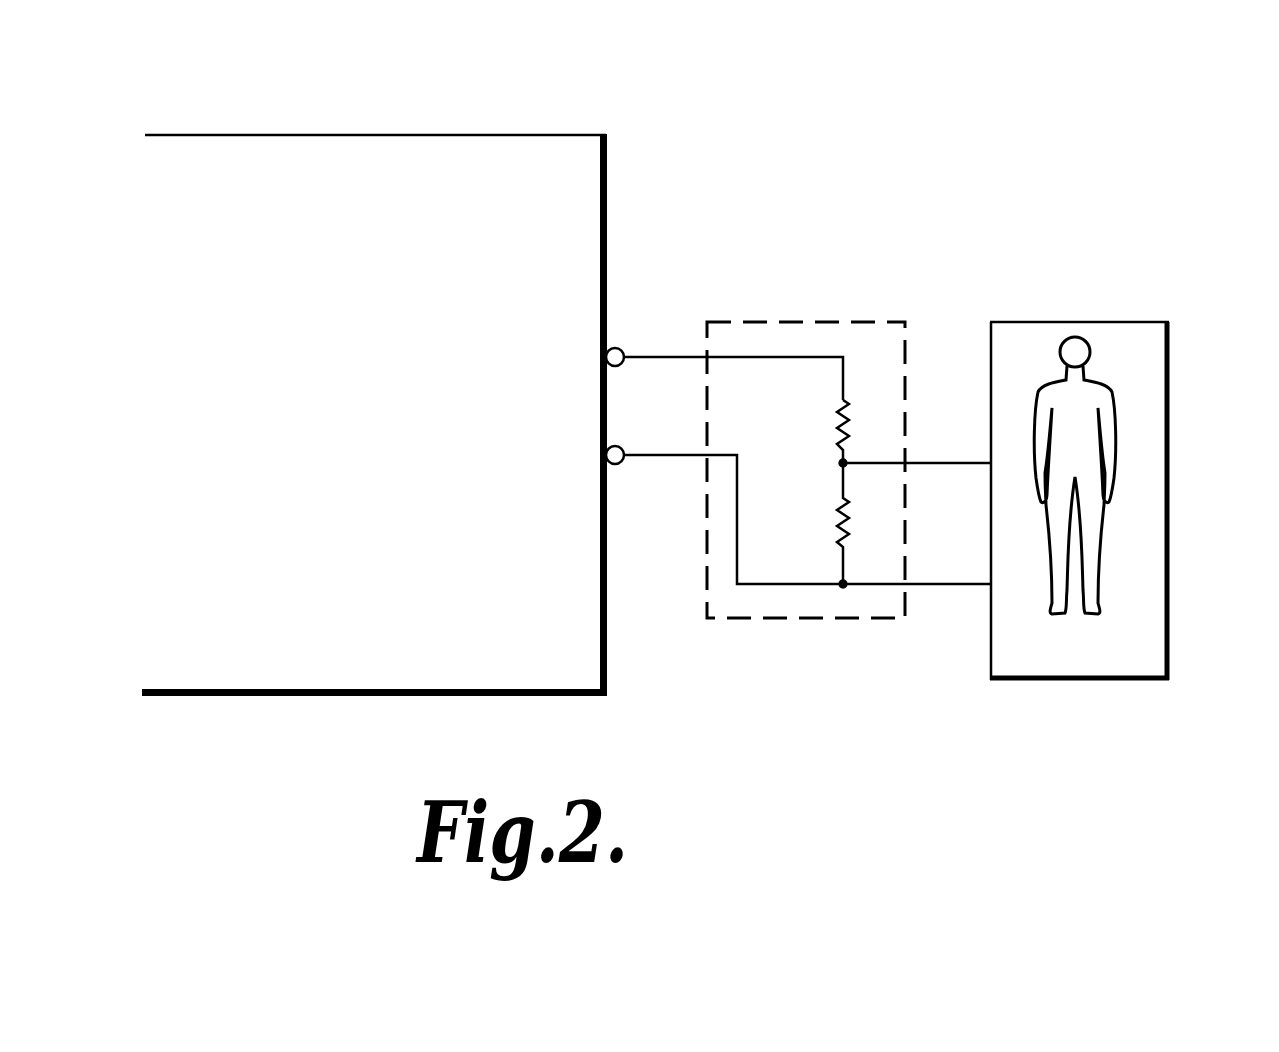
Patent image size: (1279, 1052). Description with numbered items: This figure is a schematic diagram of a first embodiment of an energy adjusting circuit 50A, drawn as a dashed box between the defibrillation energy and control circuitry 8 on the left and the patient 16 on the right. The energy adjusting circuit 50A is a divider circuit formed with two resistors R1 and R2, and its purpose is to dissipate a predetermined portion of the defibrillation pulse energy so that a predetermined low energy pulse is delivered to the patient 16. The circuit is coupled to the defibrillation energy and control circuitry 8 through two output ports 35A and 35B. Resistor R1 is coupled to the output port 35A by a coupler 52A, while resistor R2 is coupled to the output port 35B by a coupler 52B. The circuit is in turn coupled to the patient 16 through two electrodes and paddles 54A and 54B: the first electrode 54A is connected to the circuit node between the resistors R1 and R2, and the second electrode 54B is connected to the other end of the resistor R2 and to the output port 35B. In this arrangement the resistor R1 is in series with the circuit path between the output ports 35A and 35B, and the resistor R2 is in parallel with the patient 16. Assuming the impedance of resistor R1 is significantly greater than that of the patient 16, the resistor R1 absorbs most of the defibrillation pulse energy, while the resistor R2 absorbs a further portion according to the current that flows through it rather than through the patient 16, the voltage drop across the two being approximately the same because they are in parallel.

The defibrillation energy and control circuitry 8 is at (210, 133).
The output port 35A is at (620, 348).
The output port 35B is at (620, 465).
The energy adjusting circuit 50A is at (889, 320).
The coupler 52A is at (790, 357).
The coupler 52B is at (769, 590).
The first electrode 54A is at (892, 462).
The second electrode 54B is at (885, 590).
The resistor R1 is at (836, 420).
The resistor R2 is at (836, 518).
The patient 16 is at (1170, 393).